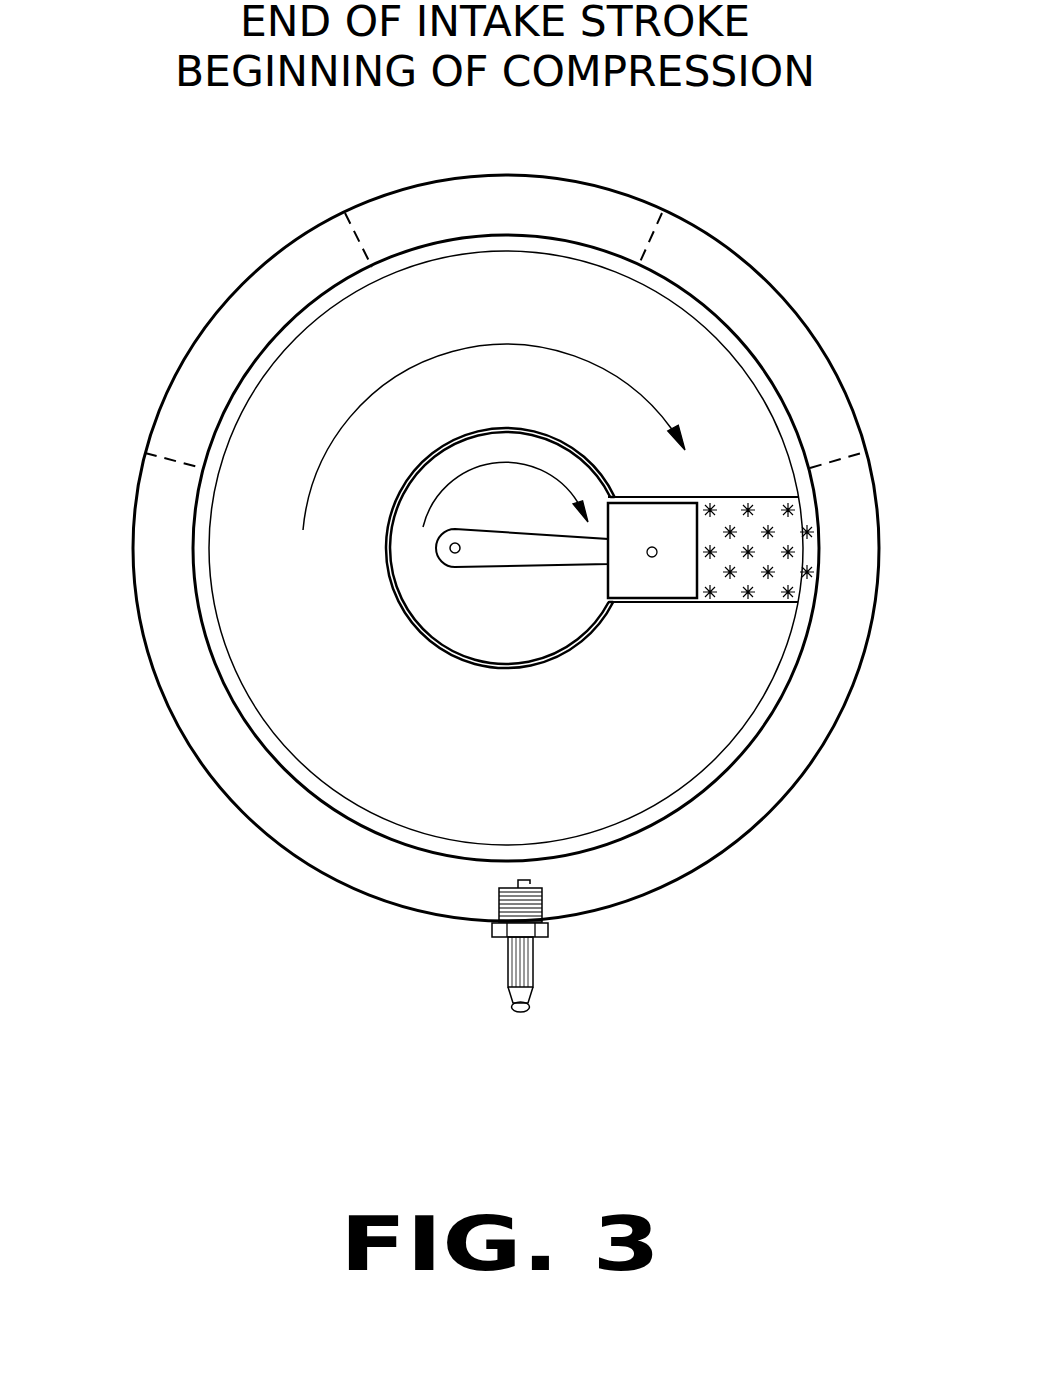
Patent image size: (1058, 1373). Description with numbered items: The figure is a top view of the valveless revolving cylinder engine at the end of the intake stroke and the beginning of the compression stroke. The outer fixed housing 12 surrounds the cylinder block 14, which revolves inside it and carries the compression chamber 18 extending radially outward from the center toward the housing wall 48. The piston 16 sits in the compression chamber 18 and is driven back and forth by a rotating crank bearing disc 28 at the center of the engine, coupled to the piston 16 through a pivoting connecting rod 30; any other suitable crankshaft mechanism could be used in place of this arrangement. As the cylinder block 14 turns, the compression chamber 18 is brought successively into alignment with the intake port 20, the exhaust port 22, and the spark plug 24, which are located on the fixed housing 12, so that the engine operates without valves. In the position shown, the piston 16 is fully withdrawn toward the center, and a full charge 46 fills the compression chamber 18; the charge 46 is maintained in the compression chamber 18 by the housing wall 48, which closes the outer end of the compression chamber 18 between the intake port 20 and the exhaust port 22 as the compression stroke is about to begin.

The fixed housing 12 is at (233, 795).
The cylinder block 14 is at (758, 725).
The piston 16 is at (685, 545).
The compression chamber 18 is at (728, 508).
The intake port 20 is at (795, 362).
The exhaust port 22 is at (300, 295).
The spark plug 24 is at (530, 962).
The crank bearing disc 28 is at (407, 545).
The connecting rod 30 is at (450, 552).
The charge 46 is at (788, 548).
The housing wall 48 is at (693, 305).